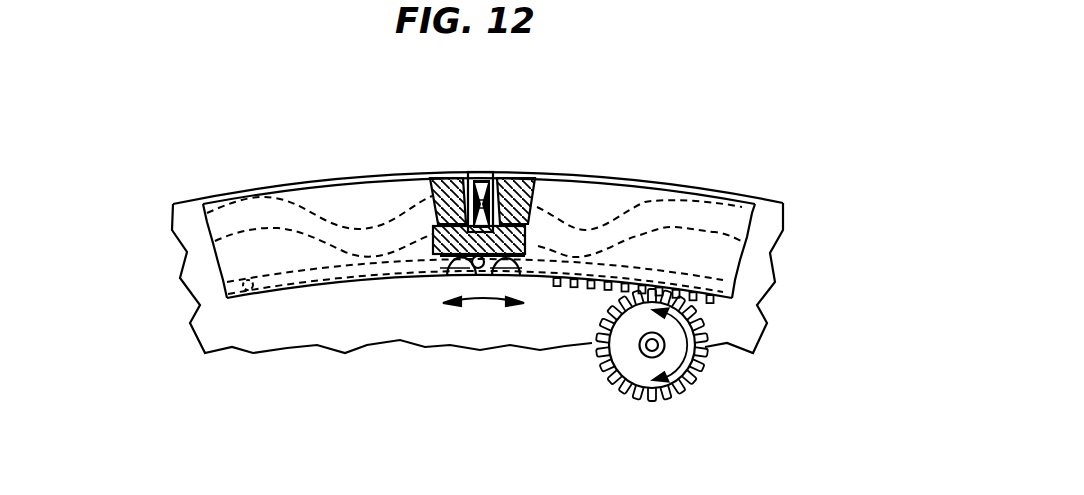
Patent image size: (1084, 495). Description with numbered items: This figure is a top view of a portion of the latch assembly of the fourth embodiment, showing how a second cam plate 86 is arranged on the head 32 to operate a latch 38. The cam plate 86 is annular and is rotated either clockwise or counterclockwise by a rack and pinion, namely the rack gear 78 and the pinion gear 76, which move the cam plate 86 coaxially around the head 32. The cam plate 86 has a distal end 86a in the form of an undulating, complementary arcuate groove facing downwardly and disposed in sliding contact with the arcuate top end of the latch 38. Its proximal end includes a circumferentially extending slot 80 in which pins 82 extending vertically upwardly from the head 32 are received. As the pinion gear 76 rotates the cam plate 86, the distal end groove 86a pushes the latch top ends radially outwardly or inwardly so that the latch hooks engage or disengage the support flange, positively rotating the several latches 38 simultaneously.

The head 32 is at (770, 188).
The latch 38 is at (479, 152).
The pinion gear 76 is at (703, 372).
The rack gear 78 is at (594, 290).
The slot 80 is at (518, 266).
The pin 82 is at (448, 266).
The second cam plate 86 is at (768, 271).
The distal end 86a is at (530, 200).